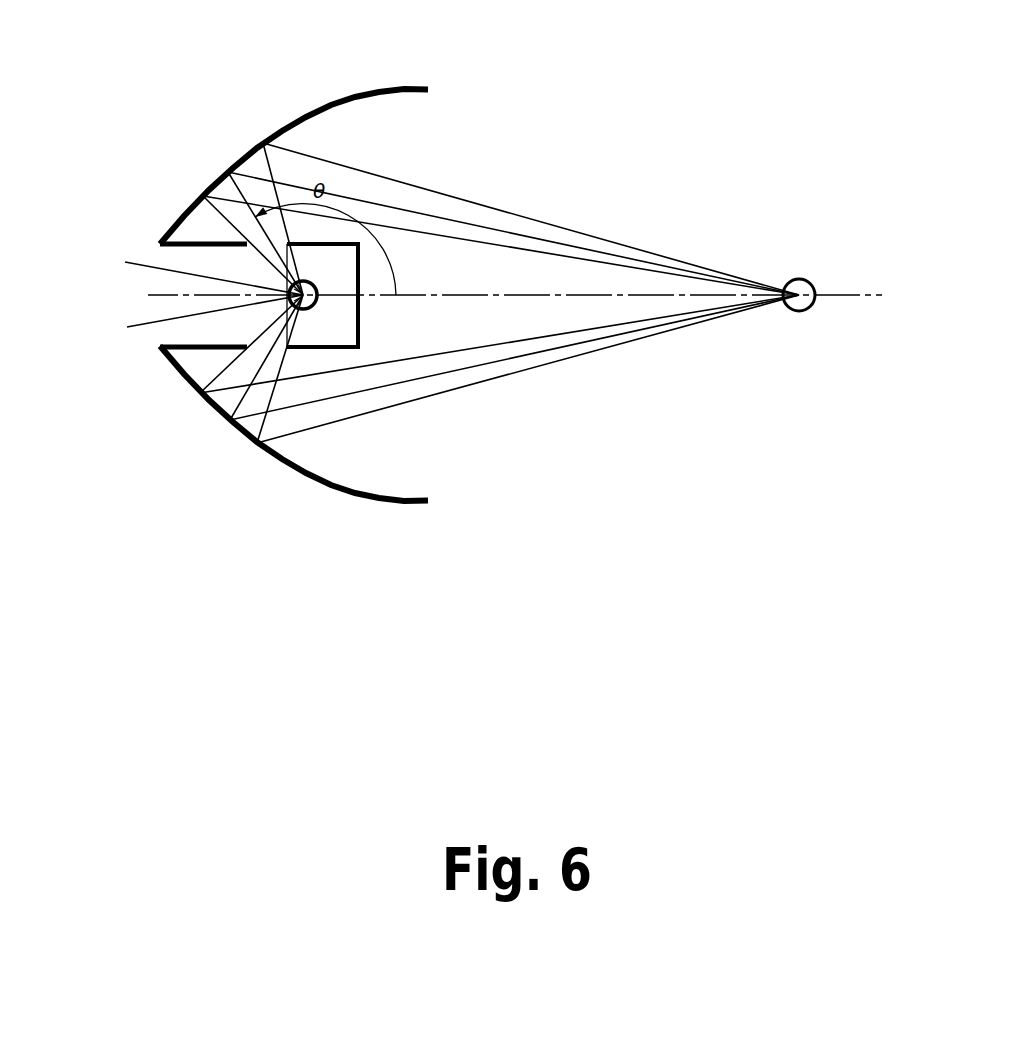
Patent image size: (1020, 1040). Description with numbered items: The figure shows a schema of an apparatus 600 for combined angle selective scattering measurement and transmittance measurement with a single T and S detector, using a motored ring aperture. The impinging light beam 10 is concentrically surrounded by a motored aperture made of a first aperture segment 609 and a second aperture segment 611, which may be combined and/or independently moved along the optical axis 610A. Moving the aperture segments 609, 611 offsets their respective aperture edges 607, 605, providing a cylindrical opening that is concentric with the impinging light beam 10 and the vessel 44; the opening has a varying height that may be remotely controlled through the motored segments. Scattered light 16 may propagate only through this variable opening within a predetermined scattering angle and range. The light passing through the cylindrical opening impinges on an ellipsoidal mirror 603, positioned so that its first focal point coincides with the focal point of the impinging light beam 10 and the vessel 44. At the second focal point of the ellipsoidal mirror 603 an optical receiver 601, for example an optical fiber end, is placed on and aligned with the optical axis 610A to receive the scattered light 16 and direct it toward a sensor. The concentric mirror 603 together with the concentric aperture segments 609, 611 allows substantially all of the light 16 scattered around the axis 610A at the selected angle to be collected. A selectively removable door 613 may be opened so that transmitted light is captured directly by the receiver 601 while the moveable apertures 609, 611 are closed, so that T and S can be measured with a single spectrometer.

The apparatus 600 is at (625, 82).
The optical receiver 601 is at (775, 321).
The ellipsoidal mirror 603 is at (342, 492).
The aperture edge 605 is at (288, 347).
The aperture edge 607 is at (245, 346).
The first aperture segment 609 is at (203, 242).
The second aperture segment 611 is at (326, 242).
The selectively removable door 613 is at (372, 270).
The vessel 44 is at (323, 267).
The scattered light 16 is at (265, 367).
The impinging light beam 10 is at (143, 263).
The optical axis 610A is at (172, 295).